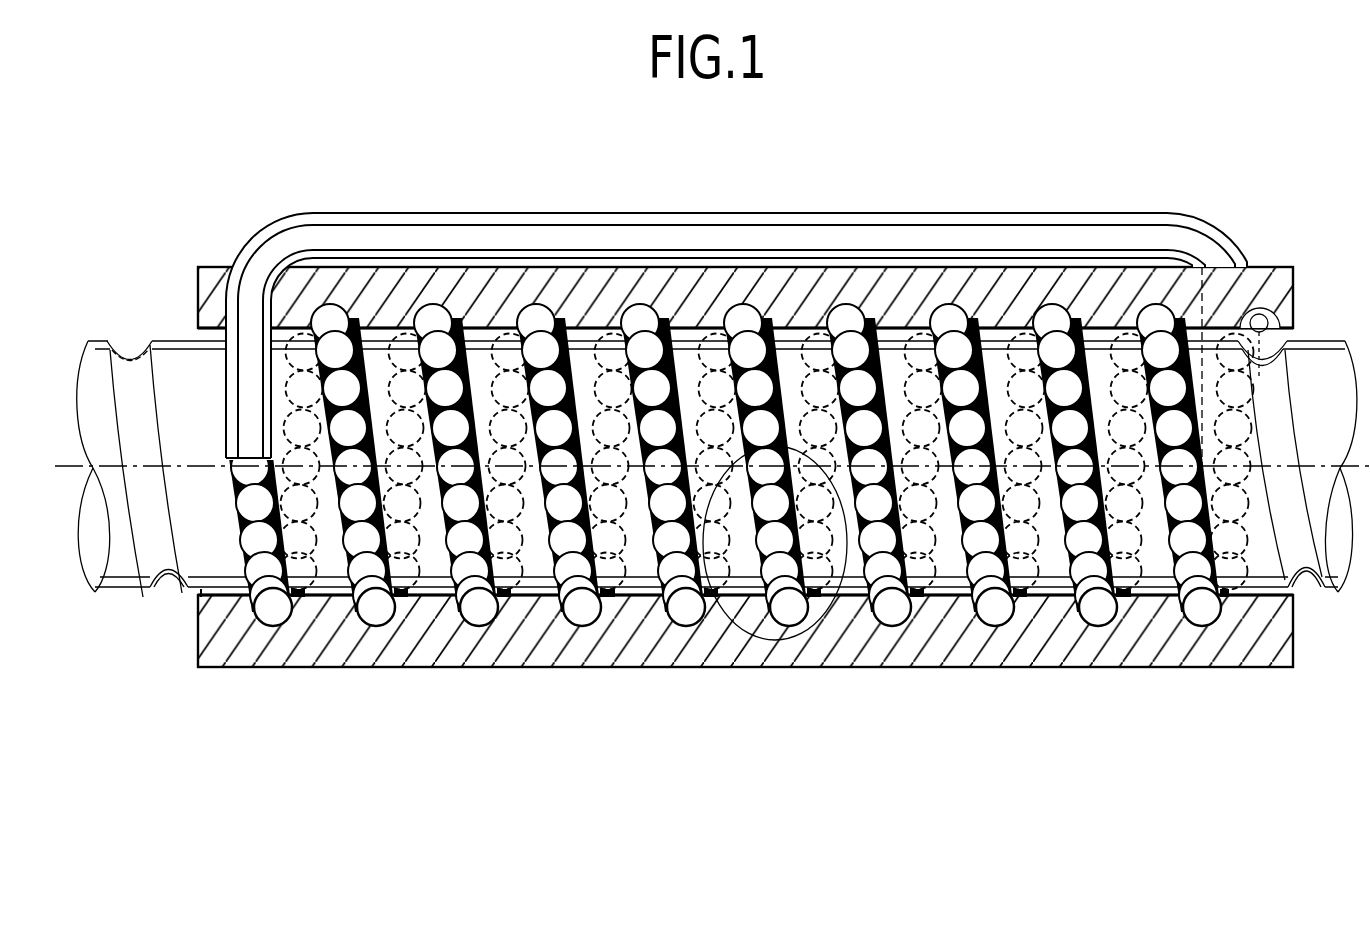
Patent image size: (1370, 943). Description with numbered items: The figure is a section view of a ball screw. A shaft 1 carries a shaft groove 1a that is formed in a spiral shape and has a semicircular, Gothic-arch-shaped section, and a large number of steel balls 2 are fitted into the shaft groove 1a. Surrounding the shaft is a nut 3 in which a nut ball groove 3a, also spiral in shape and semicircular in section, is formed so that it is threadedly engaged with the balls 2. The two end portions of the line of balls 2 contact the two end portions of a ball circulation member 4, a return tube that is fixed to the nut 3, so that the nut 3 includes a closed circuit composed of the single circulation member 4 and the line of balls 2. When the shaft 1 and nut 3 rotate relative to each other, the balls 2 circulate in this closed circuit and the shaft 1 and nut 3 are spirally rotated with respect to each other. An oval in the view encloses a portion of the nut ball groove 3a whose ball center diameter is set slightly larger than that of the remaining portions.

The shaft 1 is at (123, 562).
The shaft groove 1a is at (158, 543).
The balls 2 is at (845, 328).
The nut 3 is at (1172, 648).
The nut ball groove 3a is at (1259, 314).
The ball circulation member 4 is at (557, 238).